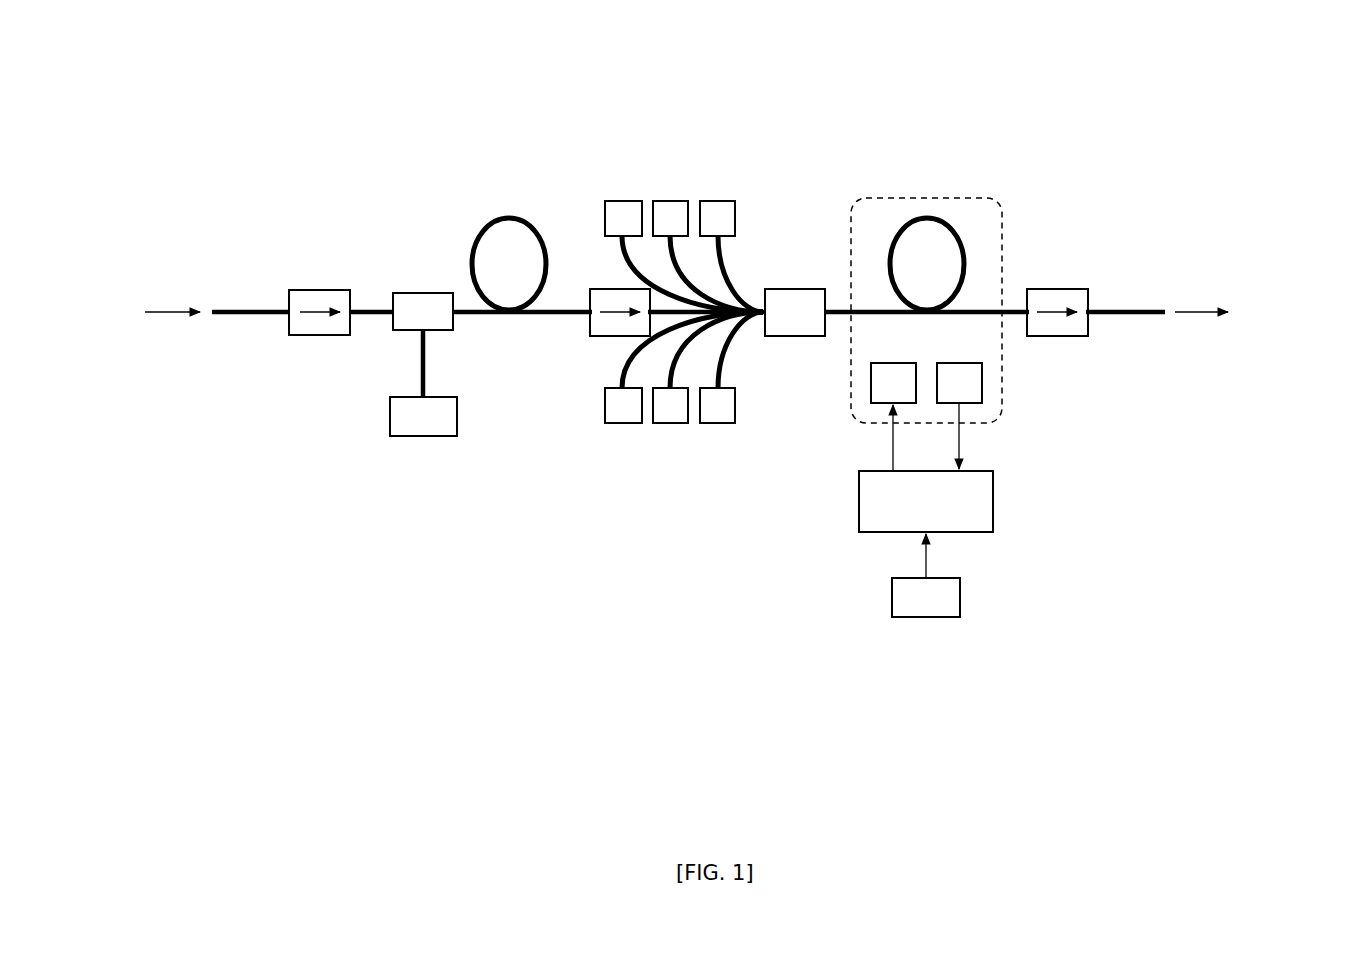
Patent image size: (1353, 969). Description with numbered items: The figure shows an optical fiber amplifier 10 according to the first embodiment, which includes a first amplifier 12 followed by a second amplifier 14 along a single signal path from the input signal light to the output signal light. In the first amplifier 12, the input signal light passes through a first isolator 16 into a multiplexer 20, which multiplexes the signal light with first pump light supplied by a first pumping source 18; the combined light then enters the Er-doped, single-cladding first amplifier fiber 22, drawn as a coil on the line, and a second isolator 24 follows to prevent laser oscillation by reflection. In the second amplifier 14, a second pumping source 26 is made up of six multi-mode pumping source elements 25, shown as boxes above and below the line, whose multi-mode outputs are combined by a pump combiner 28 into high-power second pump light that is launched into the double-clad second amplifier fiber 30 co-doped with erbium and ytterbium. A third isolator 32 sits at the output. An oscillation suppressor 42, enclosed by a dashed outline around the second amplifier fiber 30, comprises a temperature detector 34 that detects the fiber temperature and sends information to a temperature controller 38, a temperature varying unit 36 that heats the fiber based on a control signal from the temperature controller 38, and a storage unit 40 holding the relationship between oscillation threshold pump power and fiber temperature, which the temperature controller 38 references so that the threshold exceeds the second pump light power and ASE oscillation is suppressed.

The optical fiber amplifier 10 is at (587, 625).
The first amplifier 12 is at (474, 182).
The second amplifier 14 is at (817, 182).
The first isolator 16 is at (318, 287).
The first pumping source 18 is at (423, 436).
The multiplexer 20 is at (423, 291).
The first amplifier fiber 22 is at (509, 217).
The second isolator 24 is at (600, 287).
The pumping source element 25 is at (622, 200).
The second pumping source 26 is at (655, 443).
The pump combiner 28 is at (796, 287).
The second amplifier fiber 30 is at (927, 217).
The third isolator 32 is at (1057, 287).
The temperature detector 34 is at (982, 379).
The temperature varying unit 36 is at (871, 379).
The temperature controller 38 is at (993, 497).
The storage unit 40 is at (960, 592).
The oscillation suppressor 42 is at (1078, 466).